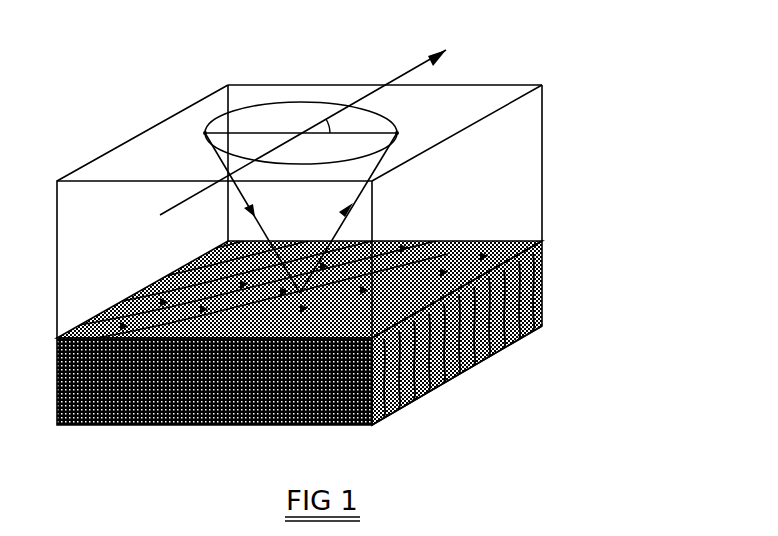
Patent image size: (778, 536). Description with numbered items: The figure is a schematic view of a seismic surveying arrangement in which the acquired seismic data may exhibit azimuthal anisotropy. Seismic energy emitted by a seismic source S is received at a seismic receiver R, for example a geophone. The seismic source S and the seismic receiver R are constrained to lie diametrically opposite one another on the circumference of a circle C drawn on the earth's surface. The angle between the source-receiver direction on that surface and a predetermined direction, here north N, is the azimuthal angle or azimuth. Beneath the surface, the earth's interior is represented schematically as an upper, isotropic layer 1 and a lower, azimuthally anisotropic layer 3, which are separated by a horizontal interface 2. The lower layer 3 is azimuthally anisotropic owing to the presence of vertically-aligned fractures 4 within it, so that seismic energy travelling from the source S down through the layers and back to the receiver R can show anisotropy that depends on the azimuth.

The isotropic layer 1 is at (502, 157).
The horizontal interface 2 is at (534, 235).
The azimuthally anisotropic layer 3 is at (534, 284).
The vertically-aligned fractures 4 is at (453, 363).
The circle C is at (283, 93).
The seismic source S is at (240, 205).
The seismic receiver R is at (362, 198).
The north direction N is at (319, 125).